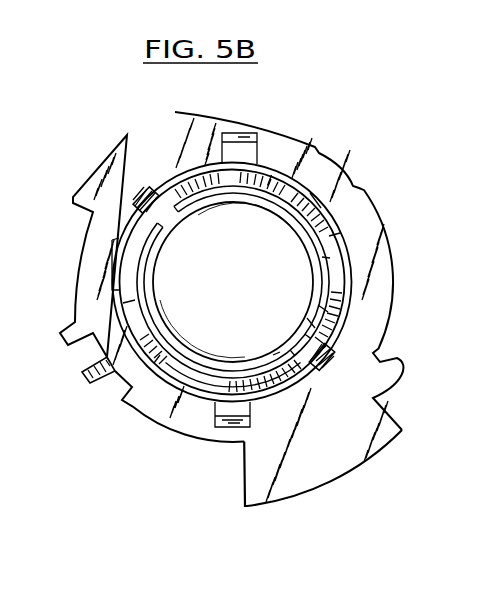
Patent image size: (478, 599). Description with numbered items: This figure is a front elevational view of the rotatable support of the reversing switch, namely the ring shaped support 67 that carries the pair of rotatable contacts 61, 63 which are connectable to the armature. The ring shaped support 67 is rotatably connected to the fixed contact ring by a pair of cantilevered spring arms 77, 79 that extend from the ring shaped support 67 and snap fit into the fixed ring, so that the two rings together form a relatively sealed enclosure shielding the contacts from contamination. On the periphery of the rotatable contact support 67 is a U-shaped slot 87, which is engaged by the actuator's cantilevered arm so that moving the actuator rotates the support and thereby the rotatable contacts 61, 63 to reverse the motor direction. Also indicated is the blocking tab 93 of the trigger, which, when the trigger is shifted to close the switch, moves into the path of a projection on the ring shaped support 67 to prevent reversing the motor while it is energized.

The rotatable contact 61 is at (272, 166).
The rotatable contact 63 is at (348, 318).
The ring shaped support 67 is at (102, 244).
The cantilevered spring arm 77 is at (143, 196).
The cantilevered spring arm 79 is at (373, 398).
The U-shaped slot 87 is at (88, 349).
The blocking tab 93 is at (260, 494).